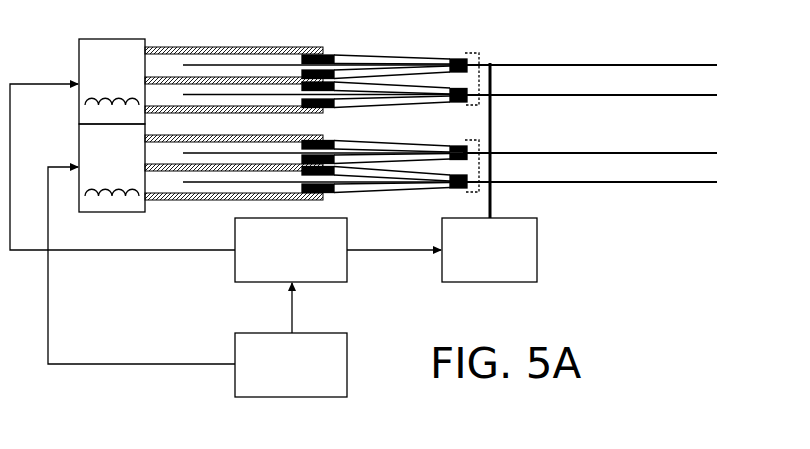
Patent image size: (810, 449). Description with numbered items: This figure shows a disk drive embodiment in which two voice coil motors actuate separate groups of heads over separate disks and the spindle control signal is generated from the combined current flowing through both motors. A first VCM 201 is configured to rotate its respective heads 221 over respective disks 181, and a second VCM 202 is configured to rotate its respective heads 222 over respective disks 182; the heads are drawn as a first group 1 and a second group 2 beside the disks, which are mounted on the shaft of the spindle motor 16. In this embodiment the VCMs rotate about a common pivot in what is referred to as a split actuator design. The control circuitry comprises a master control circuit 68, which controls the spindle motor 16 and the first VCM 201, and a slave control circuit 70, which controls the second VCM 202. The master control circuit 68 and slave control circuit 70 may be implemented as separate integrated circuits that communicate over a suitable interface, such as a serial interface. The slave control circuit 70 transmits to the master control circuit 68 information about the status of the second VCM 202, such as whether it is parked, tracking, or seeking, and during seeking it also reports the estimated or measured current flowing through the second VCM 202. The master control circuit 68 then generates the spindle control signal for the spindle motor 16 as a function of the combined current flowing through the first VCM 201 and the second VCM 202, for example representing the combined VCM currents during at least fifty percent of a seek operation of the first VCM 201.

The first VCM 201 is at (79, 48).
The second VCM 202 is at (79, 138).
The first set of read/write heads 221 is at (457, 57).
The second set of read/write heads 222 is at (457, 146).
The first set of disks 181 is at (709, 63).
The second set of disks 182 is at (706, 152).
The first head stack 1 is at (472, 71).
The second head stack 2 is at (472, 158).
The spindle motor 16 is at (537, 248).
The master control circuit 68 is at (322, 282).
The slave control circuit 70 is at (322, 397).